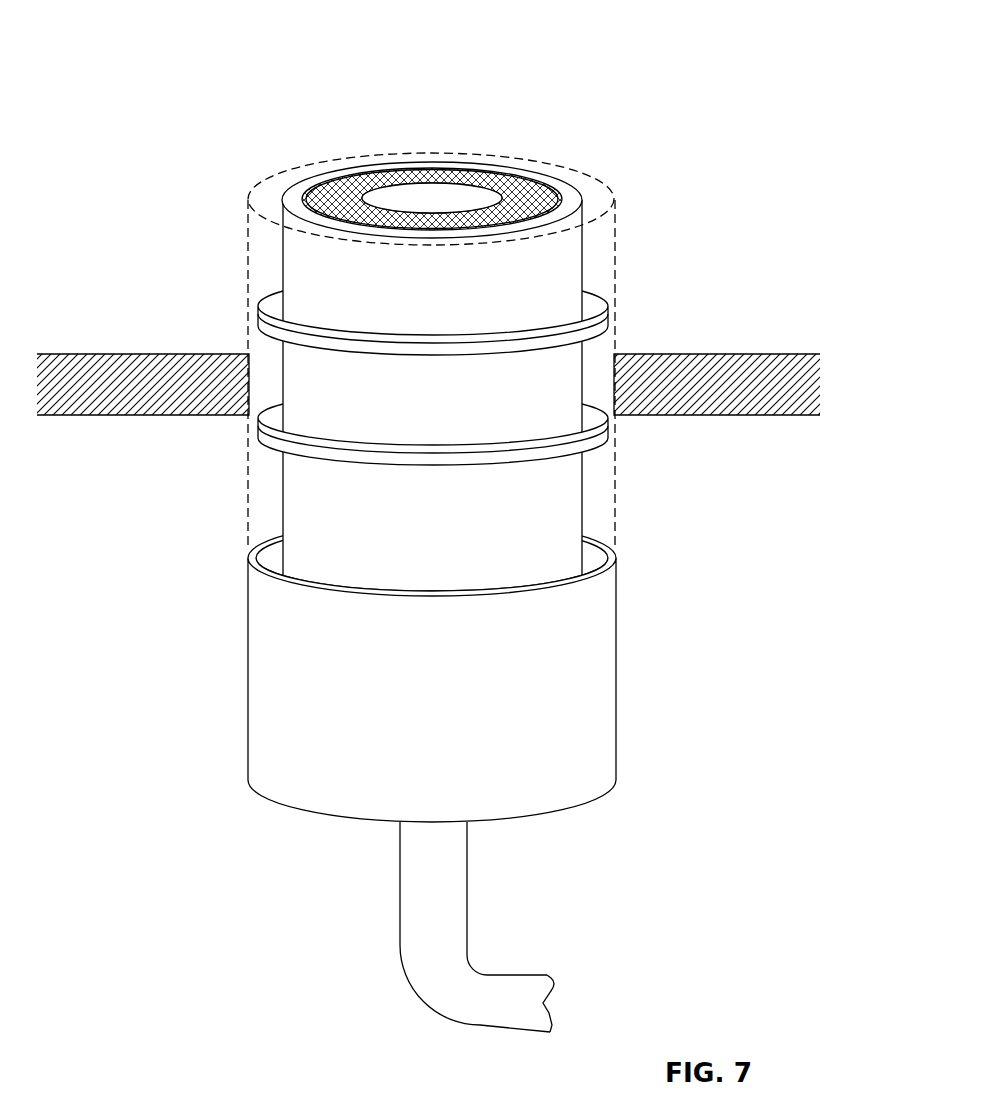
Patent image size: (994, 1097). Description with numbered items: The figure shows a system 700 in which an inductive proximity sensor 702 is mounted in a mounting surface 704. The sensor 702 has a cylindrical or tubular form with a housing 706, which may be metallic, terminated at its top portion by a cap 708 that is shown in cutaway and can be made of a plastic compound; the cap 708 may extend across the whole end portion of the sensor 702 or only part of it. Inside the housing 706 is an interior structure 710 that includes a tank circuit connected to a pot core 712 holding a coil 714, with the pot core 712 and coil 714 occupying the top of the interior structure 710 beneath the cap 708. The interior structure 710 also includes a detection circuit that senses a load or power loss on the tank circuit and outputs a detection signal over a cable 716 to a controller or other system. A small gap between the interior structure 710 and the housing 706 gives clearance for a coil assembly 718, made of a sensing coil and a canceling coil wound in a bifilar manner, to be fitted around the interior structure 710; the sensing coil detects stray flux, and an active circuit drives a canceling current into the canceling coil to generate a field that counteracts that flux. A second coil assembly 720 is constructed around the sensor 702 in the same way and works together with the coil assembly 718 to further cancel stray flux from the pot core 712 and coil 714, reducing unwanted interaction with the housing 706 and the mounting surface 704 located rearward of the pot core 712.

The system 700 is at (684, 45).
The inductive proximity sensor 702 is at (620, 167).
The mounting surface 704 is at (732, 333).
The housing 706 is at (433, 481).
The cap 708 is at (312, 162).
The interior structure 710 is at (390, 365).
The pot core 712 is at (515, 176).
The coil 714 is at (322, 201).
The cable 716 is at (520, 952).
The coil assembly 718 is at (365, 345).
The second coil assembly 720 is at (388, 459).